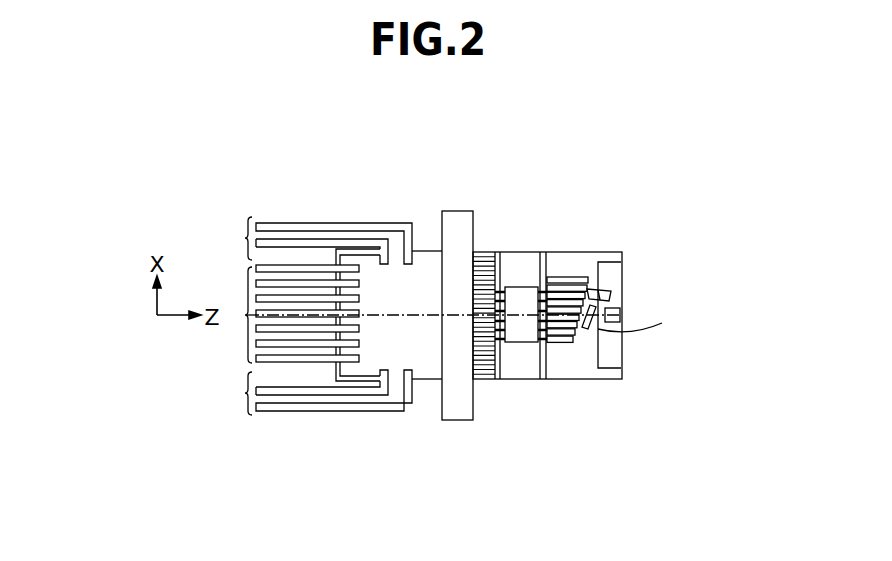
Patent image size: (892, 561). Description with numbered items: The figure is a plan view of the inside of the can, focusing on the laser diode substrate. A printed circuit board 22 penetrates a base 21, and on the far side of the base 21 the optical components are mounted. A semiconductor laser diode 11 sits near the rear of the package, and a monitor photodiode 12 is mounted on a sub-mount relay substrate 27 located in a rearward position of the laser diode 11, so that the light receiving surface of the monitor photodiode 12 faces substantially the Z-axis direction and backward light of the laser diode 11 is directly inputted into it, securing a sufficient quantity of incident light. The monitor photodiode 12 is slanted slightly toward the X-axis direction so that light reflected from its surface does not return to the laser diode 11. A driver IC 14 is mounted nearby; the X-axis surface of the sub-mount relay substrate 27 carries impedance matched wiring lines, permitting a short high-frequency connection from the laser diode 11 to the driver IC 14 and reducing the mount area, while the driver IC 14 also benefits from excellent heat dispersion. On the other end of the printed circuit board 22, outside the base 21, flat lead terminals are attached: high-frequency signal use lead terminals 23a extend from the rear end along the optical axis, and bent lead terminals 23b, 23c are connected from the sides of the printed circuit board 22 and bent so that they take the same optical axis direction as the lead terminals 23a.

The semiconductor laser diode 11 is at (610, 293).
The monitor photodiode 12 is at (621, 315).
The driver IC 14 is at (521, 303).
The base 21 is at (447, 209).
The printed circuit board 22 is at (405, 278).
The high-frequency signal use lead terminals 23a is at (242, 284).
The bent lead terminals 23b is at (242, 238).
The bent lead terminals 23c is at (242, 393).
The sub-mount relay substrate 27 is at (568, 278).